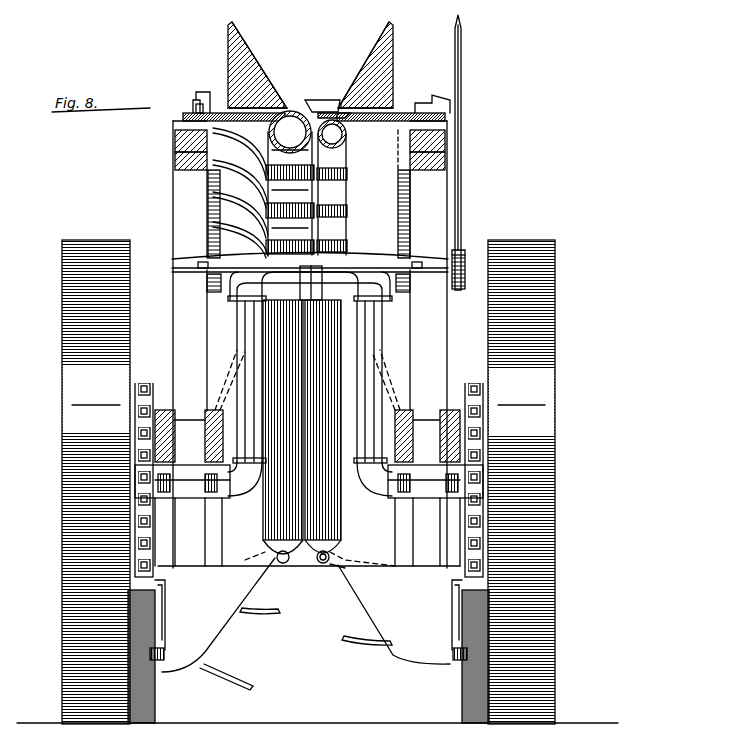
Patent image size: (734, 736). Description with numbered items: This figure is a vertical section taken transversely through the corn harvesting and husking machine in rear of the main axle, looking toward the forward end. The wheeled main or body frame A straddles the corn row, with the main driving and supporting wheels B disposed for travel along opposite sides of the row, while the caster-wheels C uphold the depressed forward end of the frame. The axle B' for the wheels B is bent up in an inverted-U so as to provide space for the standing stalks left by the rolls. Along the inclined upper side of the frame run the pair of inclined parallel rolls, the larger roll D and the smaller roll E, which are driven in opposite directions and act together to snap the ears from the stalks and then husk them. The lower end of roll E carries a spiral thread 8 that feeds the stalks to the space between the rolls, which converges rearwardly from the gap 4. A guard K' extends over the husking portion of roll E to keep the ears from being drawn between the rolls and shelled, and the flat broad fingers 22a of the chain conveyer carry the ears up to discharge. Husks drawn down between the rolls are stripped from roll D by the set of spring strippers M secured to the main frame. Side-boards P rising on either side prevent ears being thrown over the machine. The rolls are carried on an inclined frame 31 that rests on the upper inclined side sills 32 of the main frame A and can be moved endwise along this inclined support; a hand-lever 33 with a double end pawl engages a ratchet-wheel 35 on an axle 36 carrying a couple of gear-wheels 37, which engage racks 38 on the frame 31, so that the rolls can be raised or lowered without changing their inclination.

The side-boards P is at (380, 45).
The roll D is at (290, 112).
The roll E is at (338, 165).
The fingers 22a is at (312, 98).
The guard K' is at (334, 97).
The inclined frame 31 is at (175, 136).
The upper inclined side sills 32 is at (175, 156).
The strippers M is at (207, 192).
The racks 38 is at (208, 215).
The main frame A is at (449, 332).
The hand-lever 33 is at (461, 190).
The ratchet-wheel 35 is at (460, 286).
The axle 36 is at (388, 260).
The gear-wheels 37 is at (207, 282).
The main driving and supporting wheels B is at (299, 482).
The axle B' is at (310, 394).
The spiral thread 8 is at (320, 560).
The gap 4 is at (330, 581).
The caster-wheels C is at (470, 680).